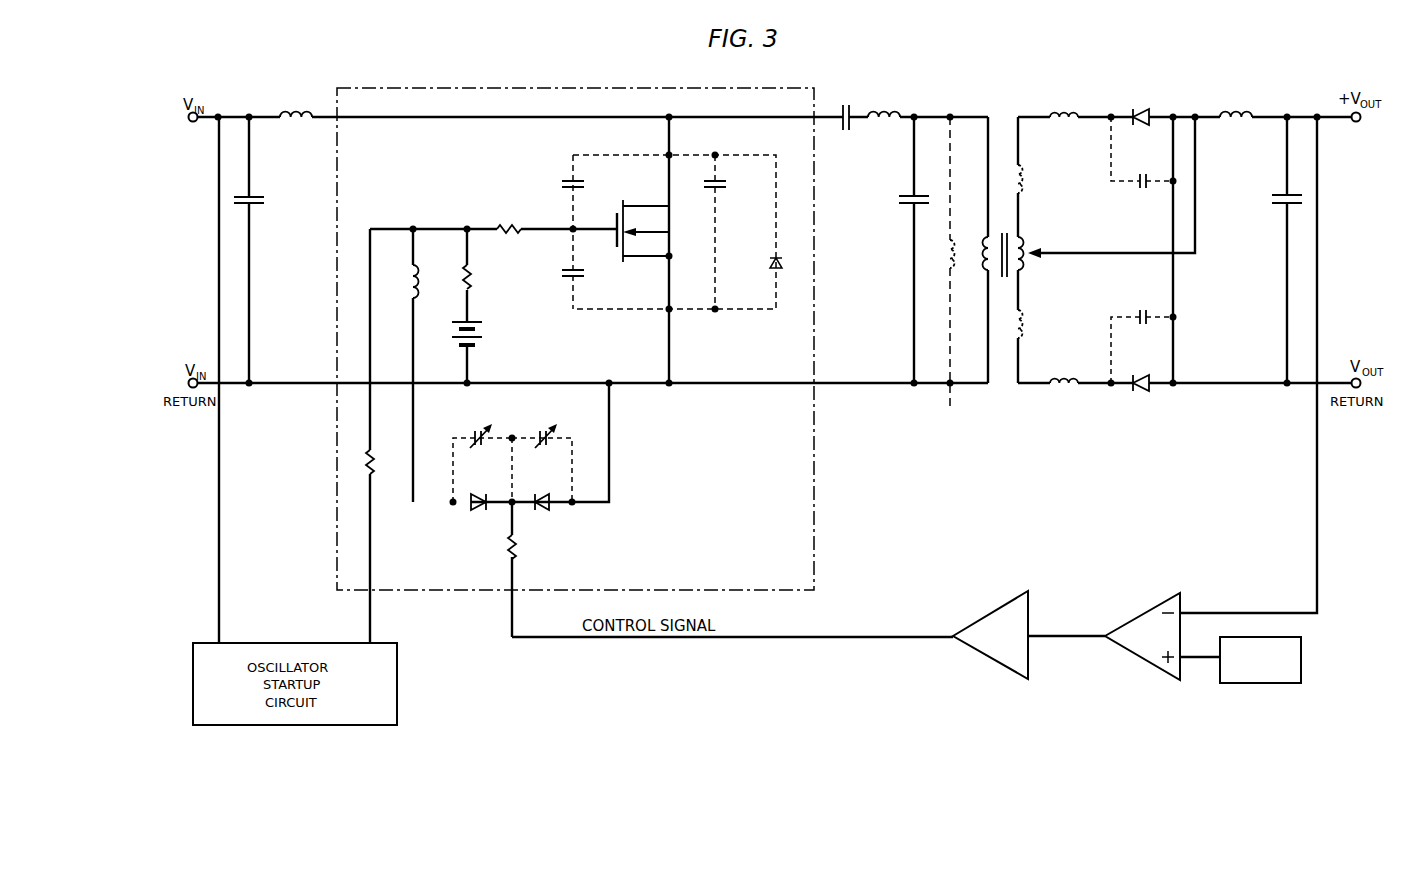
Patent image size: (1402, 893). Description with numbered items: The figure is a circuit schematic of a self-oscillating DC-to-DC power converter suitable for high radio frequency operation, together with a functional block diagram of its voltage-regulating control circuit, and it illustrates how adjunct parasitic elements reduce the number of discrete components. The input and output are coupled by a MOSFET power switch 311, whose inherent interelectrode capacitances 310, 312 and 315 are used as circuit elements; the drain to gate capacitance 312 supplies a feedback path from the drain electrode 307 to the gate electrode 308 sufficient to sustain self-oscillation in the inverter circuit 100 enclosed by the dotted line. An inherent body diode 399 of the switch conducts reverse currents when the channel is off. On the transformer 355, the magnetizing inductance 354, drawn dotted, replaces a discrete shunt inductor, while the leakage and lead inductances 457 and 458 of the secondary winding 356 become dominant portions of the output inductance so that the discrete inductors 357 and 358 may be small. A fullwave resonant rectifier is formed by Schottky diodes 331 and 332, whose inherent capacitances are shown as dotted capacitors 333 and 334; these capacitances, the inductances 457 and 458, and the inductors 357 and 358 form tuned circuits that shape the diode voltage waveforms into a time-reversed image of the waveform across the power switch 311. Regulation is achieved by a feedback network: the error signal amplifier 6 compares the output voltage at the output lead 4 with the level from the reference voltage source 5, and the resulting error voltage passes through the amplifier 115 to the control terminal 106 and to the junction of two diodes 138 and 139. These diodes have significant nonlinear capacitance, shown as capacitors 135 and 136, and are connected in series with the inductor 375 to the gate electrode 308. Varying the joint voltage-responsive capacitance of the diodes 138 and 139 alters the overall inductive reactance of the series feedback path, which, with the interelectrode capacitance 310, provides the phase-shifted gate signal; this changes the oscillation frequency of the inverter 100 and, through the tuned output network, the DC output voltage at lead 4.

The inverter circuit 100 is at (371, 88).
The drain electrode 307 is at (672, 238).
The gate electrode 308 is at (571, 226).
The MOSFET power switch 311 is at (649, 231).
The drain to gate capacitance 312 is at (669, 232).
The interelectrode capacitance 310 is at (591, 273).
The interelectrode capacitance 315 is at (733, 232).
The body diode 399 is at (759, 263).
The inductor 375 is at (398, 281).
The capacitor 135 is at (482, 452).
The capacitor 136 is at (542, 452).
The diode 138 is at (481, 490).
The diode 139 is at (541, 490).
The control terminal 106 is at (512, 613).
The magnetizing inductance 354 is at (960, 247).
The transformer 355 is at (1019, 106).
The secondary winding 356 is at (1032, 252).
The leakage and lead inductance 457 is at (1040, 179).
The leakage and lead inductance 458 is at (1040, 324).
The inductor 357 is at (1075, 101).
The inductor 358 is at (1075, 368).
The Schottky rectifier diode 331 is at (1239, 105).
The Schottky rectifier diode 332 is at (1239, 372).
The capacitor 333 is at (1142, 152).
The capacitor 334 is at (1142, 333).
The output lead 4 is at (1351, 128).
The amplifier 115 is at (993, 609).
The error signal amplifier 6 is at (1152, 610).
The reference voltage source 5 is at (1301, 660).